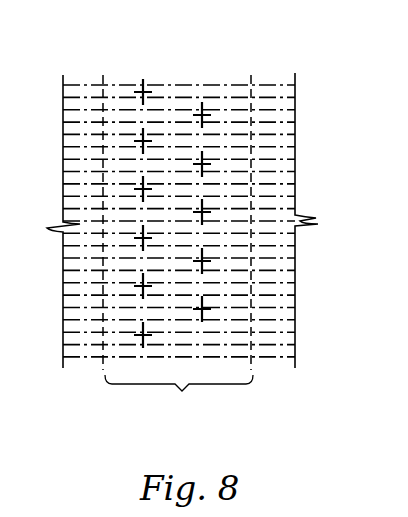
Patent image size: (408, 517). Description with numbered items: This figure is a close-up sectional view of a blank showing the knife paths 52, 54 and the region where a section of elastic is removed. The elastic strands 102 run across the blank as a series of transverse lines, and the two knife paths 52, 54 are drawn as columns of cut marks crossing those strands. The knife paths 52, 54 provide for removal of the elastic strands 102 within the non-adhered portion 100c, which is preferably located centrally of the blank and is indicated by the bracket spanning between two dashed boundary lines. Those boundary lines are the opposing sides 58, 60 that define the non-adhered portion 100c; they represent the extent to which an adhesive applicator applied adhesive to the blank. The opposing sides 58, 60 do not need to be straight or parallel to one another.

The opposing side 58 is at (103, 90).
The knife path 52 is at (152, 89).
The knife path 54 is at (213, 110).
The opposing side 60 is at (250, 100).
The elastic strands 102 is at (295, 131).
The non-adhered portion 100c is at (179, 394).